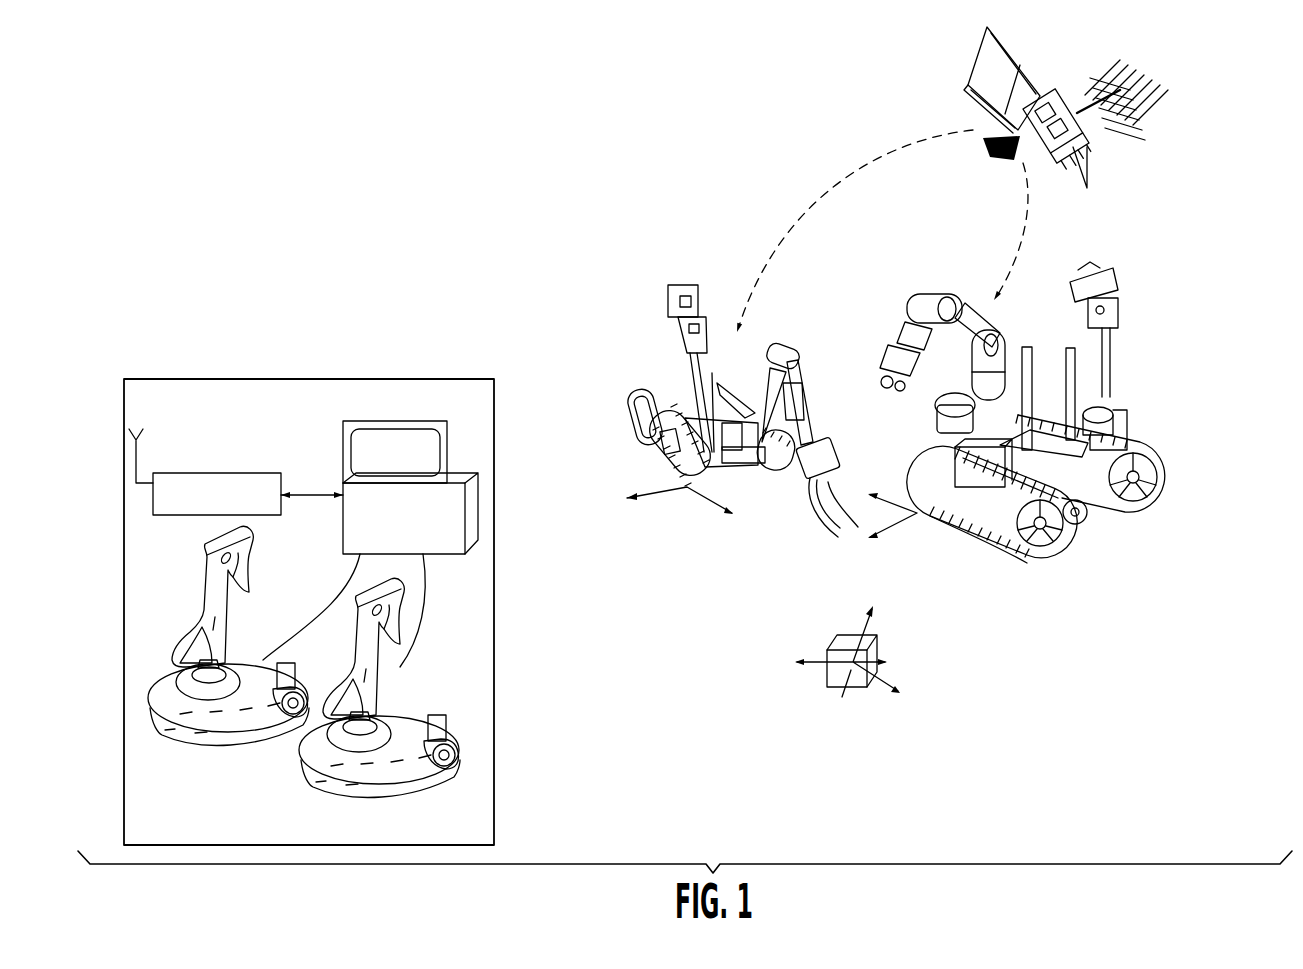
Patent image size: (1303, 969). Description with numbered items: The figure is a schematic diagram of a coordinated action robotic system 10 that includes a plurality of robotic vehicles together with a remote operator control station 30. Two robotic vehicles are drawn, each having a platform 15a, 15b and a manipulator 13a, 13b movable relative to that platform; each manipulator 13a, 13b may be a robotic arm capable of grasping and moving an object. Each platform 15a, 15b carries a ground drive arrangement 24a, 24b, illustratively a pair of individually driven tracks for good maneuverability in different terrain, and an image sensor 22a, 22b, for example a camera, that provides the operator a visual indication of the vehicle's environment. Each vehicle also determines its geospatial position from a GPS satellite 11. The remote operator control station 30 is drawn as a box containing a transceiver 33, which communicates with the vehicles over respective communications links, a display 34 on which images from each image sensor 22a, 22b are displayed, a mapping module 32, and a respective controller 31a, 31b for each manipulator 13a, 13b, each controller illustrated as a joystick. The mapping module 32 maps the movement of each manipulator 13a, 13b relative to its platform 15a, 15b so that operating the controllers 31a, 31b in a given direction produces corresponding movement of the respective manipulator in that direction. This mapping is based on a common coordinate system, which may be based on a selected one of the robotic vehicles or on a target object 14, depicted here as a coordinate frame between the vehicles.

The coordinated action robotic system 10 is at (501, 192).
The GPS satellite 11 is at (976, 62).
The manipulator 13a is at (791, 345).
The manipulator 13b is at (928, 293).
The target object 14 is at (852, 690).
The platform 15a is at (660, 460).
The platform 15b is at (1153, 421).
The image sensor 22a is at (668, 297).
The image sensor 22b is at (1110, 270).
The ground drive arrangement 24a is at (632, 392).
The ground drive arrangement 24b is at (1077, 550).
The remote operator control station 30 is at (223, 377).
The controller 31a is at (153, 726).
The controller 31b is at (433, 777).
The mapping module 32 is at (478, 502).
The remote operator control station transceiver 33 is at (153, 505).
The display 34 is at (447, 433).